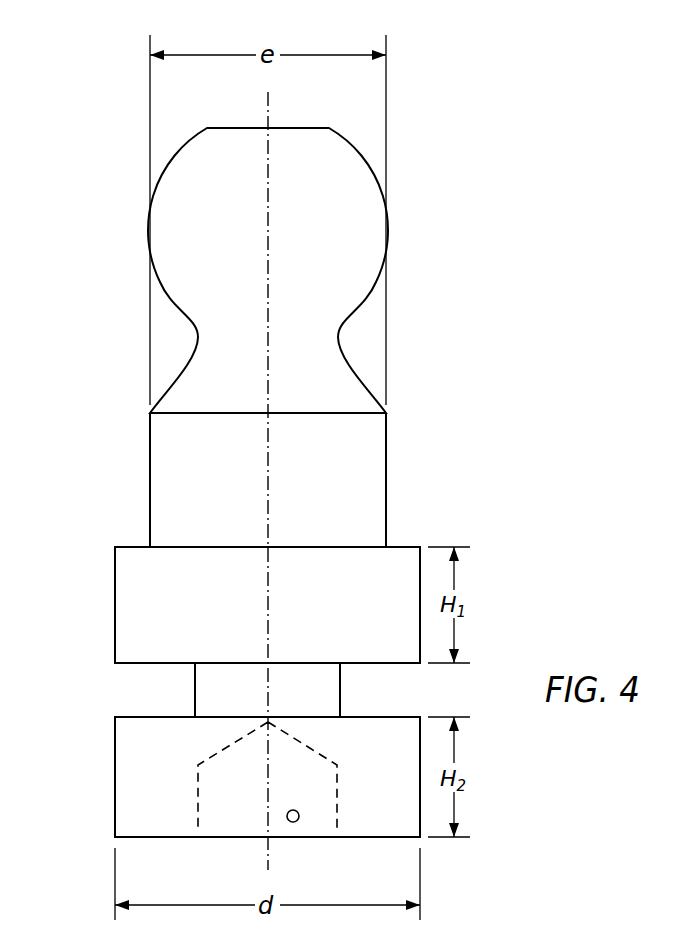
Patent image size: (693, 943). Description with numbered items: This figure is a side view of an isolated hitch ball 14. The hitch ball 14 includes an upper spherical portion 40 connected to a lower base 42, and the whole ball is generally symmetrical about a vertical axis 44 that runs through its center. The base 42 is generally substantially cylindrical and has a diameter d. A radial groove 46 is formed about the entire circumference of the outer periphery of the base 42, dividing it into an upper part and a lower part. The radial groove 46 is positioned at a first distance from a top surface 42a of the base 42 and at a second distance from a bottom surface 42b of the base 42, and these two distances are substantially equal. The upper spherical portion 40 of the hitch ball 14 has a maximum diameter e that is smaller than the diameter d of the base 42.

The hitch ball 14 is at (66, 134).
The upper spherical portion 40 is at (305, 257).
The lower base 42 is at (93, 499).
The top surface of base 42a is at (128, 547).
The bottom surface of base 42b is at (128, 840).
The vertical axis 44 is at (268, 110).
The radial groove 46 is at (340, 695).